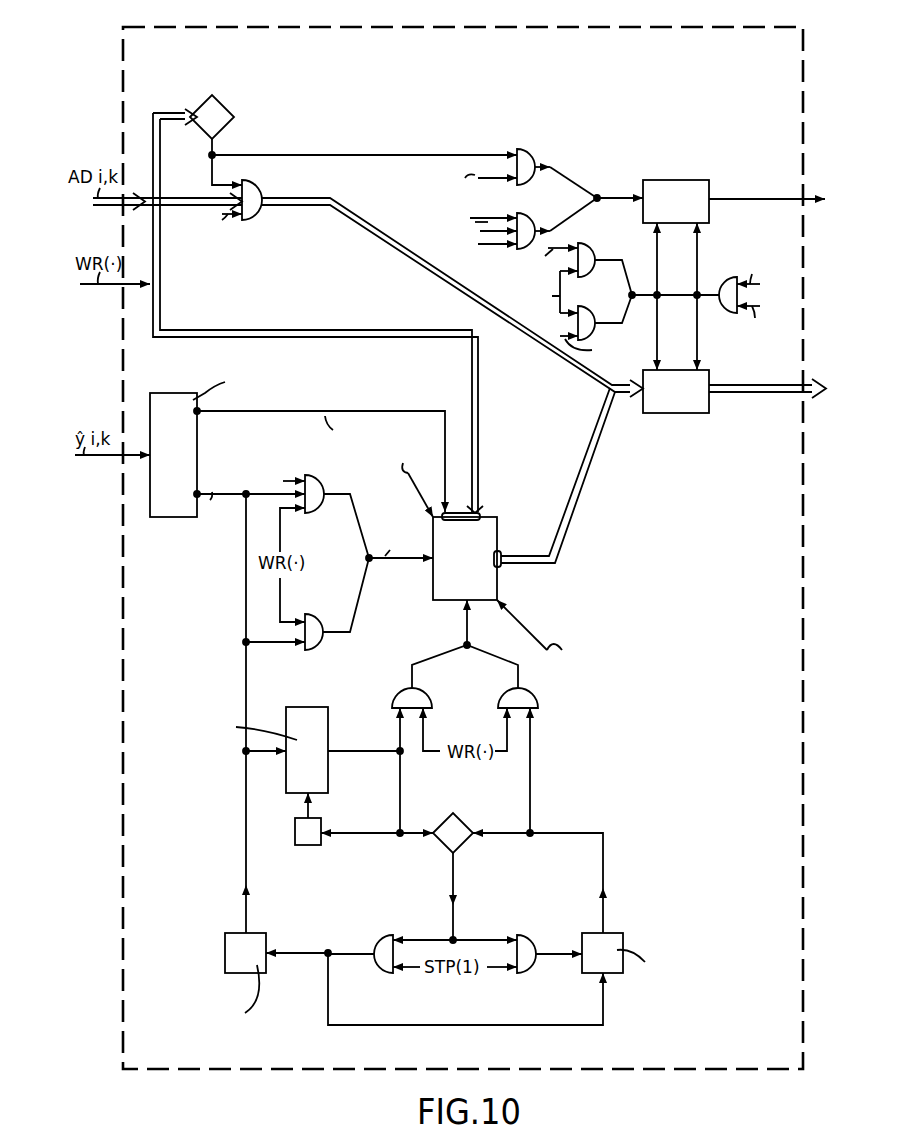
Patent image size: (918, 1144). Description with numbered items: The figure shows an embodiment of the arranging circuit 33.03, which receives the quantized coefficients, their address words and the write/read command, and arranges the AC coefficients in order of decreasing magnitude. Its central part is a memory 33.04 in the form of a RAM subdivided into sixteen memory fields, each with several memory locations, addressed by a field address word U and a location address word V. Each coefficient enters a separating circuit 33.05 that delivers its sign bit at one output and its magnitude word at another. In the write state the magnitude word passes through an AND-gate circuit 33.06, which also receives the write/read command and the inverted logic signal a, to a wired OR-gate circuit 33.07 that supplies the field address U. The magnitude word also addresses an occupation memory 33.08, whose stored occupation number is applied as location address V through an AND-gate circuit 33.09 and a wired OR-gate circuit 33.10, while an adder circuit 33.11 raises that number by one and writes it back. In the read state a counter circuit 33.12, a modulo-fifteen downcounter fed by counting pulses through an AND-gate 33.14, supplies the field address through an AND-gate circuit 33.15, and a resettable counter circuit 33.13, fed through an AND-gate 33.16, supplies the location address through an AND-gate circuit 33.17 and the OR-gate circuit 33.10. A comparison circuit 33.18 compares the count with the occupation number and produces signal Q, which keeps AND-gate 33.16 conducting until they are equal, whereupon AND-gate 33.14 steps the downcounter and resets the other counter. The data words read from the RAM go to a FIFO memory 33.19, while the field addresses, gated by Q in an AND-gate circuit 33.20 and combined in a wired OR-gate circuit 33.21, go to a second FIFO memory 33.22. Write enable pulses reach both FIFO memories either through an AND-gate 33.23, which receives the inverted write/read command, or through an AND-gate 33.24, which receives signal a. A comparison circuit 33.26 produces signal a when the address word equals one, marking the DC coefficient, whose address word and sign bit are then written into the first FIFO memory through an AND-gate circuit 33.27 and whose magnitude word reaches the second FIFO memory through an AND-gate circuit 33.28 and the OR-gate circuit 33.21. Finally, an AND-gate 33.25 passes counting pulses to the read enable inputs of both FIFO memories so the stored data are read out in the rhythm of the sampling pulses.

The arranging circuit 33.03 is at (234, 27).
The comparison circuit 33.26 is at (222, 101).
The AND-gate circuit 33.27 is at (258, 190).
The AND-gate circuit 33.28 is at (519, 148).
The AND-gate circuit 33.20 is at (508, 222).
The wired OR-gate circuit 33.21 is at (597, 194).
The second FIFO memory 33.22 is at (671, 180).
The AND-gate 33.24 is at (596, 249).
The AND-gate 33.23 is at (606, 315).
The AND-gate 33.25 is at (722, 318).
The FIFO memory 33.19 is at (673, 413).
The separating circuit 33.05 is at (170, 388).
The AND-gate circuit 33.06 is at (319, 478).
The wired OR-gate circuit 33.07 is at (371, 563).
The AND-gate circuit 33.15 is at (318, 648).
The memory 33.04 is at (497, 518).
The wired OR-gate circuit 33.10 is at (462, 645).
The AND-gate circuit 33.09 is at (402, 691).
The AND-gate circuit 33.17 is at (540, 712).
The occupation memory 33.08 is at (328, 712).
The adder circuit 33.11 is at (345, 812).
The comparison circuit 33.18 is at (462, 820).
The counter circuit 33.12 is at (230, 931).
The AND-gate 33.14 is at (383, 930).
The AND-gate 33.16 is at (522, 930).
The counter circuit 33.13 is at (610, 933).